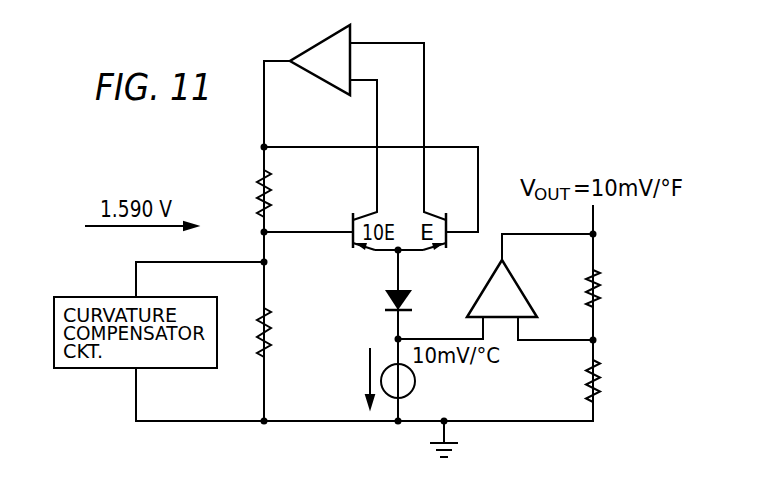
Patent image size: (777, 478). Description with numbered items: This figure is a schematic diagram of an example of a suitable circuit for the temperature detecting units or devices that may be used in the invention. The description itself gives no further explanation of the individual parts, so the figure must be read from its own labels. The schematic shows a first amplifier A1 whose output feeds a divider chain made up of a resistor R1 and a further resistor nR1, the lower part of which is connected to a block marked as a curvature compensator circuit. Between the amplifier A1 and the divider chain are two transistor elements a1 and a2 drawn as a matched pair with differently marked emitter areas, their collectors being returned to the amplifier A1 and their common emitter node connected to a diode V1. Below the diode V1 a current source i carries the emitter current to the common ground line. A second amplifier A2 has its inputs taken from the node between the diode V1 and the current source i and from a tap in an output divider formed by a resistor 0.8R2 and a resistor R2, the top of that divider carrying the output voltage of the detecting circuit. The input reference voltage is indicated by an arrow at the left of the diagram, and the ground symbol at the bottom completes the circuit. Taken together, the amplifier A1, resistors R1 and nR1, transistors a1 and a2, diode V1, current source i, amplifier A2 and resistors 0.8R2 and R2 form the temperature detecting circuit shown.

The operational amplifier A1 is at (320, 60).
The resistor R1 is at (280, 193).
The resistor nR1 is at (287, 332).
The transistor a1 (emitter area 10E) a1 is at (358, 217).
The transistor a2 (emitter area E) a2 is at (442, 217).
The diode V1 is at (387, 287).
The current source i is at (398, 381).
The operational amplifier A2 is at (502, 288).
The resistor 0.8R2 is at (626, 289).
The resistor R2 is at (611, 382).